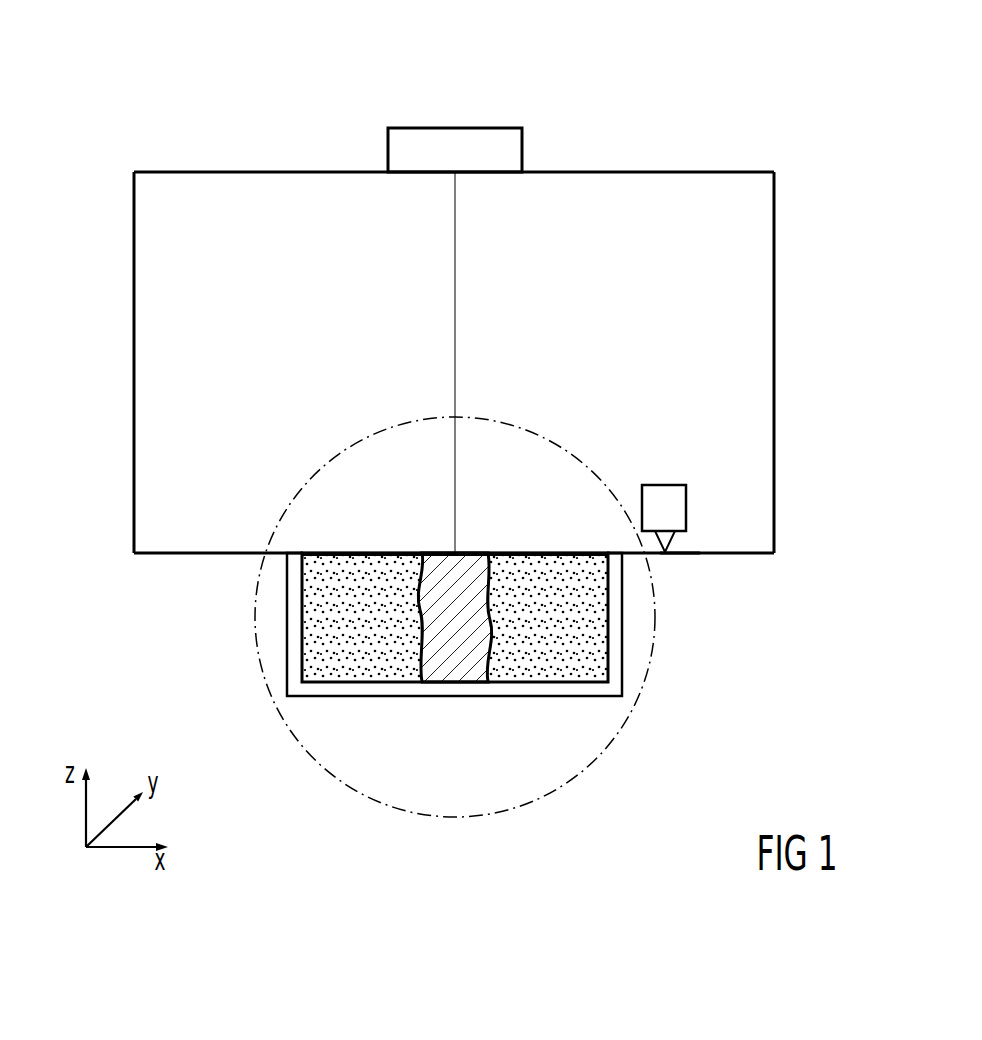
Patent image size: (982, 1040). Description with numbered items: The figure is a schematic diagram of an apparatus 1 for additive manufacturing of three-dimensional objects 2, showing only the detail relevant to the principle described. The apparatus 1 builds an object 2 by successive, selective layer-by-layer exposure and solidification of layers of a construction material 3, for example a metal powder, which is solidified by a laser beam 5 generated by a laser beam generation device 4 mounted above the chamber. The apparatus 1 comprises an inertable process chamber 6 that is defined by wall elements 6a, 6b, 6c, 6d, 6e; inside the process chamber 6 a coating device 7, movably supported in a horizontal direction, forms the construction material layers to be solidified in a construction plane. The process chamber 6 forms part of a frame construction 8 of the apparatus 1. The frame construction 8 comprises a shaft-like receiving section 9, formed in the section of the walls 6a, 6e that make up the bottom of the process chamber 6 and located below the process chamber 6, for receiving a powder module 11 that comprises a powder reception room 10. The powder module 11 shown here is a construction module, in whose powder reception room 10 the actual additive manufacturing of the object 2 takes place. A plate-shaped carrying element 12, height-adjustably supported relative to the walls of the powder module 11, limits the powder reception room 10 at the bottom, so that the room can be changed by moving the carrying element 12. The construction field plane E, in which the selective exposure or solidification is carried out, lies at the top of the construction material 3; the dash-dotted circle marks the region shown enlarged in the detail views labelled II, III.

The apparatus 1 is at (735, 70).
The three-dimensional object 2 is at (453, 668).
The construction material 3 is at (508, 665).
The laser beam generation device 4 is at (431, 128).
The laser beam 5 is at (455, 311).
The process chamber 6 is at (455, 364).
The wall element 6a is at (725, 553).
The wall element 6b is at (775, 385).
The wall element 6c is at (631, 172).
The wall element 6d is at (134, 385).
The wall element 6e is at (176, 555).
The coating device 7 is at (686, 503).
The frame construction 8 is at (680, 590).
The receiving section 9 is at (278, 634).
The powder reception room 10 is at (548, 660).
The powder module 11 is at (610, 652).
The carrying element 12 is at (362, 682).
The construction field plane E is at (383, 542).
The section views II and III II, III is at (468, 617).